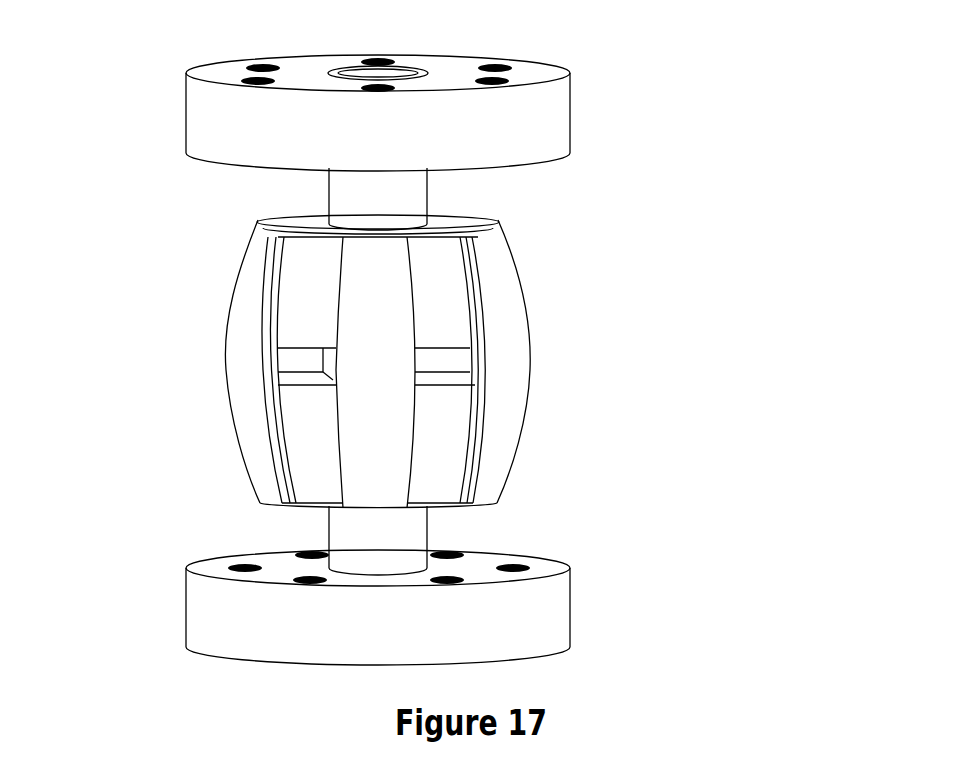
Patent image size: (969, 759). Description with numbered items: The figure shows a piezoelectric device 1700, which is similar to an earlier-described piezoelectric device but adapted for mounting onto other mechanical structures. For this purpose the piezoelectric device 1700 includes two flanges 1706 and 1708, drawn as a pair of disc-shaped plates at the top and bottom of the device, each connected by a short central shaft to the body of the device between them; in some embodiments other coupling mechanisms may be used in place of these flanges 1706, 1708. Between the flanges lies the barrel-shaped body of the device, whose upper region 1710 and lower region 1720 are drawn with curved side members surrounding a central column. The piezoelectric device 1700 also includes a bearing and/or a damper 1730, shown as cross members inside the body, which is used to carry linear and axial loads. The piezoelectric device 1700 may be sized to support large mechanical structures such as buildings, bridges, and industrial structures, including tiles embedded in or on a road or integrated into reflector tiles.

The piezoelectric device 1700 is at (146, 60).
The flange 1706 is at (557, 113).
The flange 1708 is at (417, 608).
The first deformable portion 1710 is at (440, 263).
The second deformable portion 1720 is at (438, 458).
The bearing and/or damper 1730 is at (430, 368).